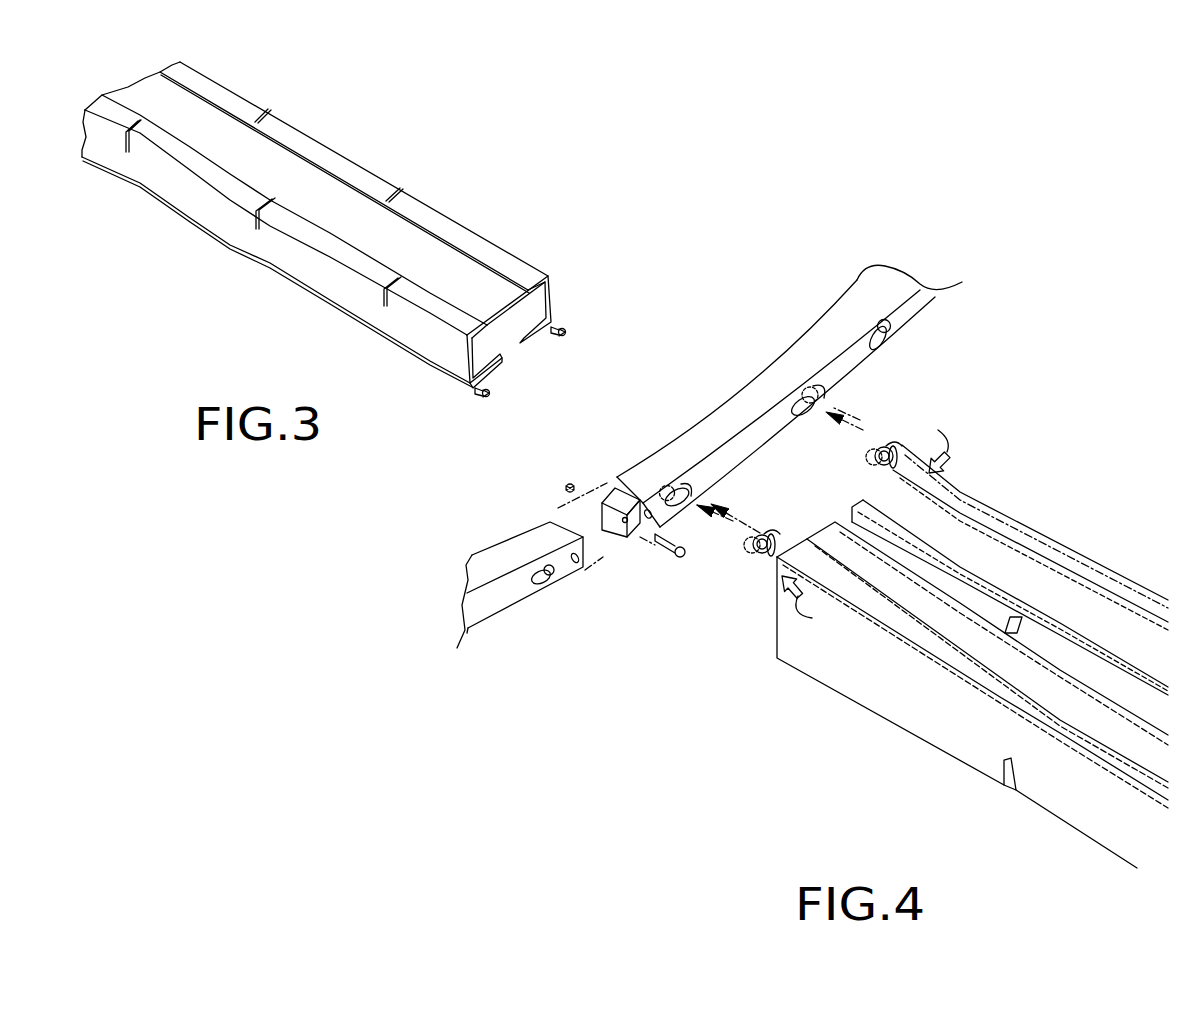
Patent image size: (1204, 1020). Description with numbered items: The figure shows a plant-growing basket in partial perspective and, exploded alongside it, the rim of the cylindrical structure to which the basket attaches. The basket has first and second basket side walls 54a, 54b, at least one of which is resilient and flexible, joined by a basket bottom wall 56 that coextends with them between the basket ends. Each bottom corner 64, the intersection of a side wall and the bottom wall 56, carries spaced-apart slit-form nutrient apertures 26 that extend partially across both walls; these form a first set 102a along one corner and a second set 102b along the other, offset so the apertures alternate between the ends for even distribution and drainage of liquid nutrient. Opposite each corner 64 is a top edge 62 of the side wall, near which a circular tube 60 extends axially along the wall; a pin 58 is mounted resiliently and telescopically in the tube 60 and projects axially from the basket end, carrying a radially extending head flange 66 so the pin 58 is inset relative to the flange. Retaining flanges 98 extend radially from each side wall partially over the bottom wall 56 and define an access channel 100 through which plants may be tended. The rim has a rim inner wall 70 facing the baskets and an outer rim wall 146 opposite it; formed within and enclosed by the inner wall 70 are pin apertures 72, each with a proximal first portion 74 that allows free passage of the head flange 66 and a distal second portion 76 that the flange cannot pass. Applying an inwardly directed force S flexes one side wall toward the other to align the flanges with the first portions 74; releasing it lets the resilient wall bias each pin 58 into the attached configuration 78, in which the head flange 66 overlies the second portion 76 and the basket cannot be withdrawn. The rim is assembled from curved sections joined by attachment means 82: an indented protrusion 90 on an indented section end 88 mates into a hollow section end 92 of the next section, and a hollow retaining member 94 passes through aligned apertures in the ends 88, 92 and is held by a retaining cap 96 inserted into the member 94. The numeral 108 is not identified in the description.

In FIG. 3, the nutrient aperture 26 is at (126, 132).
In FIG. 3, the basket bottom wall 56 is at (213, 122).
In FIG. 3, the second set of nutrient apertures 102b is at (282, 111).
In FIG. 3, the first set of nutrient apertures 102a is at (376, 300).
In FIG. 3, the bottom corner 64 is at (467, 229).
In FIG. 3, the first basket side wall 54a is at (552, 294).
In FIG. 4, the first basket side wall 54a is at (775, 565).
In FIG. 3, the second basket side wall 54b is at (467, 383).
In FIG. 3, the pin 58 is at (555, 323).
In FIG. 3, the head flange 66 is at (568, 334).
In FIG. 4, the head flange 66 is at (823, 378).
In FIG. 3, the access channel 100 is at (494, 338).
In FIG. 3, the top edge 62 is at (463, 387).
In FIG. 4, the outer rim wall 146 is at (811, 329).
In FIG. 4, the rim inner wall 70 is at (907, 309).
In FIG. 4, the first portion of pin aperture 74 is at (890, 336).
In FIG. 4, the second portion of pin aperture 76 is at (884, 343).
In FIG. 4, the attached configuration 78 is at (668, 478).
In FIG. 4, the indented section end 88 is at (610, 489).
In FIG. 4, the indented protrusion 90 is at (606, 502).
In FIG. 4, the retaining cap 96 is at (565, 487).
In FIG. 4, the hollow section end 92 is at (548, 521).
In FIG. 4, the rail segment end 108 is at (489, 621).
In FIG. 4, the pin aperture 72 is at (539, 582).
In FIG. 4, the attachment means 82 is at (648, 564).
In FIG. 4, the hollow retaining member 94 is at (679, 559).
In FIG. 4, the retaining flange 98 is at (971, 527).
In FIG. 4, the tube 60 is at (780, 544).
In FIG. 4, the inwardly directed force S is at (866, 523).